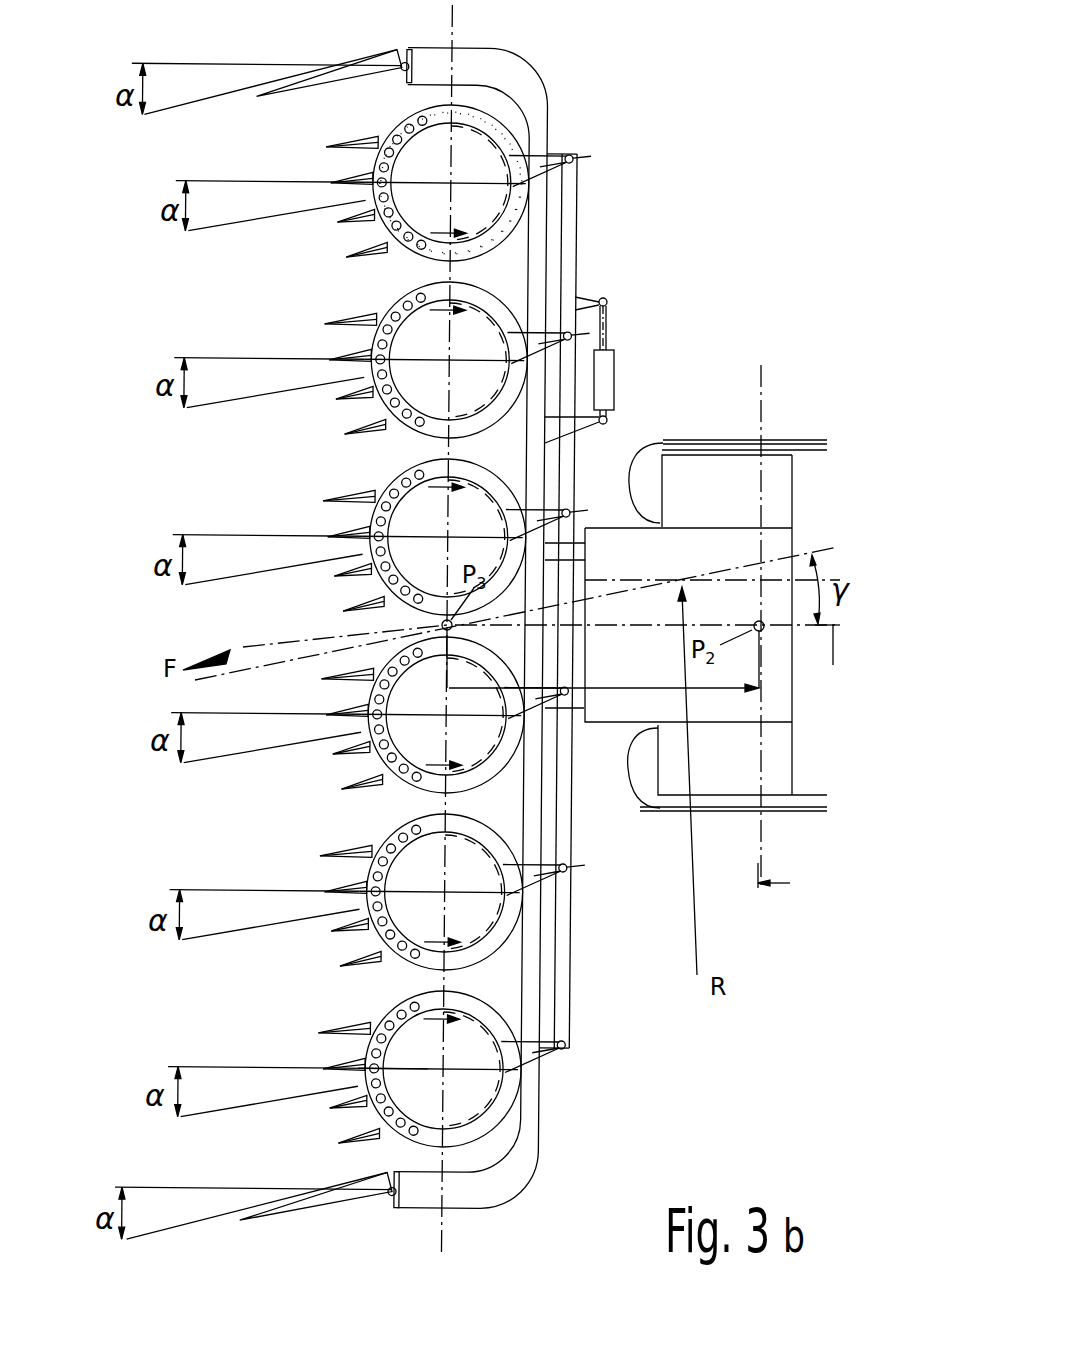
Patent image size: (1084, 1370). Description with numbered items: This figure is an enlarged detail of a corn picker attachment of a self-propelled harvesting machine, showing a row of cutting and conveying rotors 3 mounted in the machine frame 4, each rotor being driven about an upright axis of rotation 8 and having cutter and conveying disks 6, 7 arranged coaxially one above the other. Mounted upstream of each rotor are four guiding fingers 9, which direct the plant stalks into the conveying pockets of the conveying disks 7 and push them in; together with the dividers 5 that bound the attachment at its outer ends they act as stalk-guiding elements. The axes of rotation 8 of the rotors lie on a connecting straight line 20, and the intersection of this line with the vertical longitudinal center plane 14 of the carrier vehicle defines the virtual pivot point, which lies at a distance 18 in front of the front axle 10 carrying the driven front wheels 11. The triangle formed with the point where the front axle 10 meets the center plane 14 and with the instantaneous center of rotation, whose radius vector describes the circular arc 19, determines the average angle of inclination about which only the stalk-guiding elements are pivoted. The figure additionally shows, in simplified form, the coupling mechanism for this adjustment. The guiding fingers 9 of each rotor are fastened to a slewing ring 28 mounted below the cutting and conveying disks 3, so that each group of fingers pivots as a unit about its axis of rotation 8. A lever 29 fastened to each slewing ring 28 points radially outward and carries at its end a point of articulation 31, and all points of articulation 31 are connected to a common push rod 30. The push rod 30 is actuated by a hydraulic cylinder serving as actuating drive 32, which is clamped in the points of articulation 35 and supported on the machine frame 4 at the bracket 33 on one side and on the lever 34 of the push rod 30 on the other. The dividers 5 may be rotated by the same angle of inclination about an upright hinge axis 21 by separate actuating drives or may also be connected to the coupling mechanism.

The cutting and conveying rotor 3 is at (500, 197).
The machine frame 4 is at (535, 265).
The divider 5 is at (335, 77).
The cutter disk 6 is at (377, 165).
The conveying disk 7 is at (377, 165).
The axis of rotation 8 is at (360, 200).
The guiding finger 9 is at (377, 147).
The front axle 10 is at (789, 880).
The front wheel 11 is at (657, 448).
The vertical longitudinal center plane 14 is at (830, 660).
The distance 18 is at (606, 723).
The circular arc 19 is at (631, 576).
The connecting straight line 20 is at (447, 982).
The upright hinge axis 21 is at (400, 66).
The slewing ring 28 is at (480, 307).
The lever 29 is at (560, 152).
The push rod 30 is at (572, 235).
The point of articulation 31 is at (569, 156).
The actuating drive 32 is at (614, 367).
The bracket 33 is at (588, 430).
The lever of the push rod 34 is at (585, 298).
The point of articulation 35 is at (608, 302).